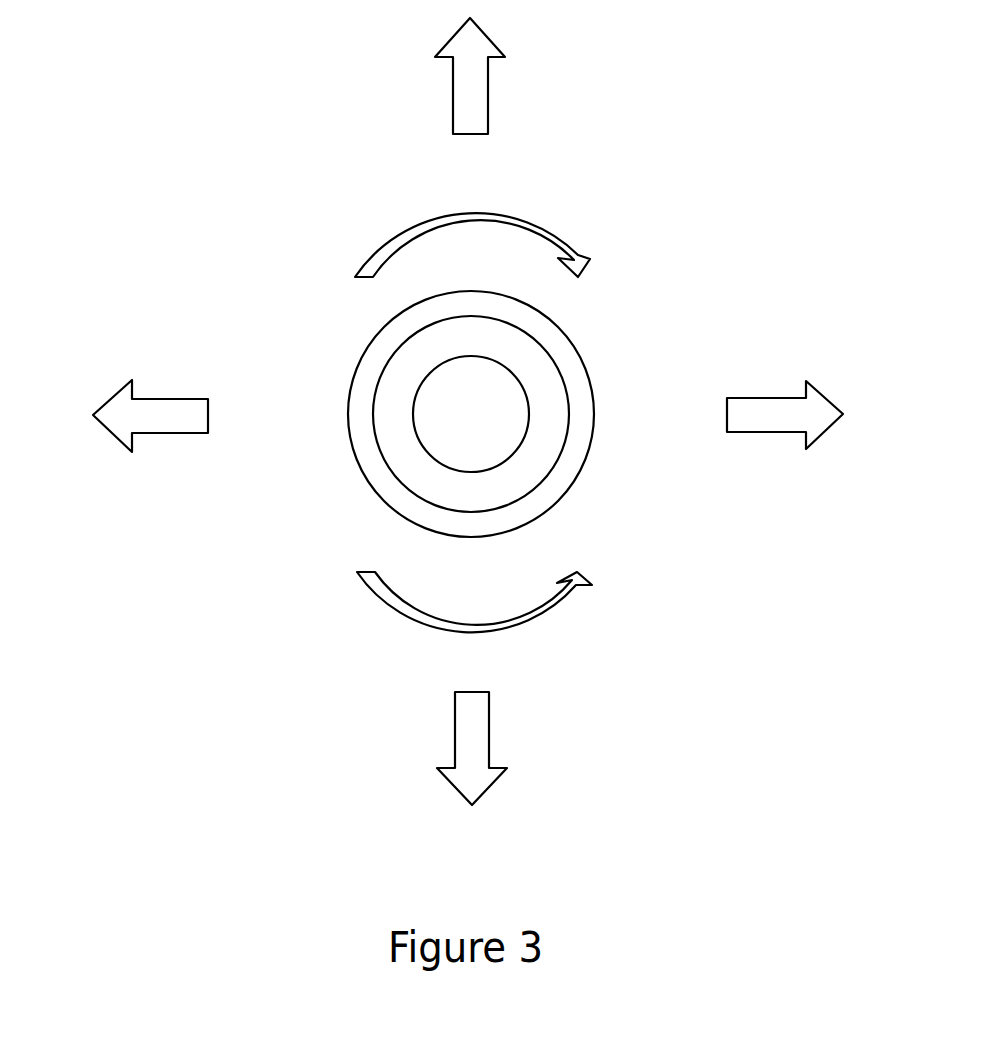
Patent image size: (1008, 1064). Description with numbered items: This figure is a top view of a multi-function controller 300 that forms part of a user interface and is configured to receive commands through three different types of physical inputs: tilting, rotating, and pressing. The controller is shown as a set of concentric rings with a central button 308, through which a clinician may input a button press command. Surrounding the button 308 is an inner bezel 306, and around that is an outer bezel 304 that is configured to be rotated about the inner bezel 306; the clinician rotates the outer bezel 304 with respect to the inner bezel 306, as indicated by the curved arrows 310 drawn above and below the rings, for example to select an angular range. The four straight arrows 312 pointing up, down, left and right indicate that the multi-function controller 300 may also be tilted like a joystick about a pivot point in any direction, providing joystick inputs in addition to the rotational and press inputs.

The multi-function controller 300 is at (781, 101).
The outer bezel 304 is at (372, 462).
The inner bezel 306 is at (398, 377).
The button 308 is at (470, 418).
The curved arrows 310 is at (507, 215).
The arrows 312 is at (453, 97).